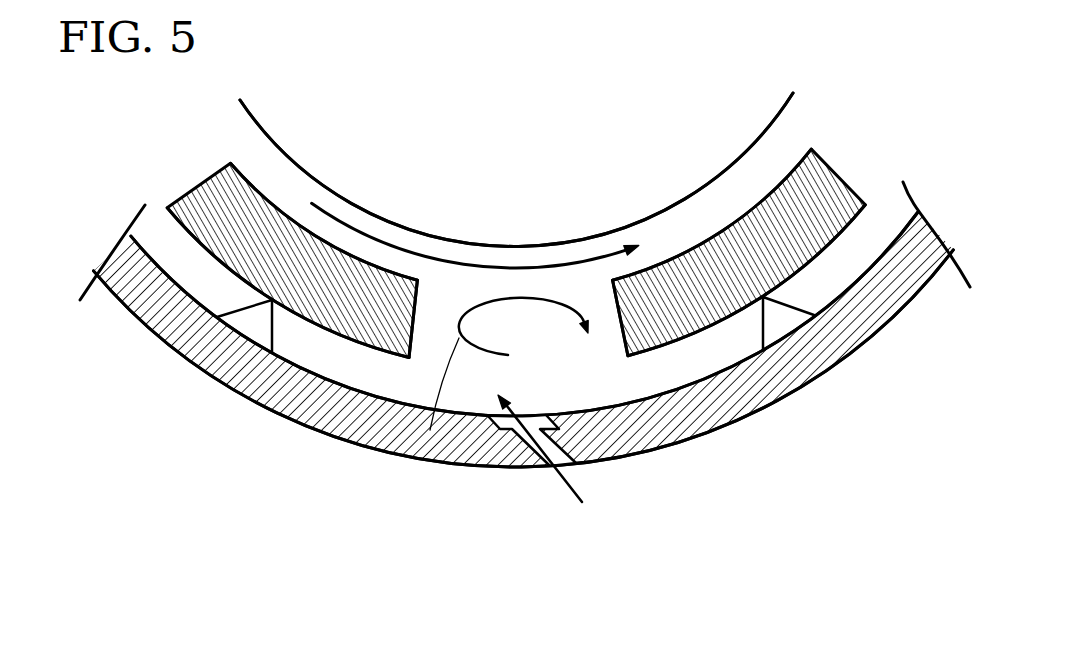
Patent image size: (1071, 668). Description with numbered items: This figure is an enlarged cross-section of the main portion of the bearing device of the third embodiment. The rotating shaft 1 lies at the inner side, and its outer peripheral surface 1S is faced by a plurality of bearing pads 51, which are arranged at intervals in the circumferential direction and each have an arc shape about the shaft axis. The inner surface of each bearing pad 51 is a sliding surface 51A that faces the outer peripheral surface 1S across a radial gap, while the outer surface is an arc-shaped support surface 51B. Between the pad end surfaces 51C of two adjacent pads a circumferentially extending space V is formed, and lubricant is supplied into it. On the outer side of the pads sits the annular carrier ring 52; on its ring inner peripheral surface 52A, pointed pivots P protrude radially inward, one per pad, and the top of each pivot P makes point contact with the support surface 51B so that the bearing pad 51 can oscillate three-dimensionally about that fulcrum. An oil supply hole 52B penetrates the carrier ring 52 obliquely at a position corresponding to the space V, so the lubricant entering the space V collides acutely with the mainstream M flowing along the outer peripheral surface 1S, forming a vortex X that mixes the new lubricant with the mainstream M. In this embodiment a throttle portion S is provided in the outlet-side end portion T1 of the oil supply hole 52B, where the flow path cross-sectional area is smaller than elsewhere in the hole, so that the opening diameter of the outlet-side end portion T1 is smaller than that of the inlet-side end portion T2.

The rotating shaft 1 is at (277, 111).
The outer peripheral surface 1S is at (275, 140).
The bearing pad 51 is at (172, 306).
The sliding surface 51A is at (263, 190).
The support surface 51B is at (353, 343).
The pad end surface 51C is at (437, 292).
The carrier ring 52 is at (703, 432).
The ring inner peripheral surface 52A is at (865, 273).
The oil supply hole 52B is at (509, 495).
The mainstream M is at (484, 280).
The pivot P is at (260, 318).
The vortex X is at (430, 430).
The space V is at (532, 340).
The throttle portion S is at (537, 417).
The outlet-side end portion T1 is at (553, 369).
The inlet-side end portion T2 is at (535, 470).